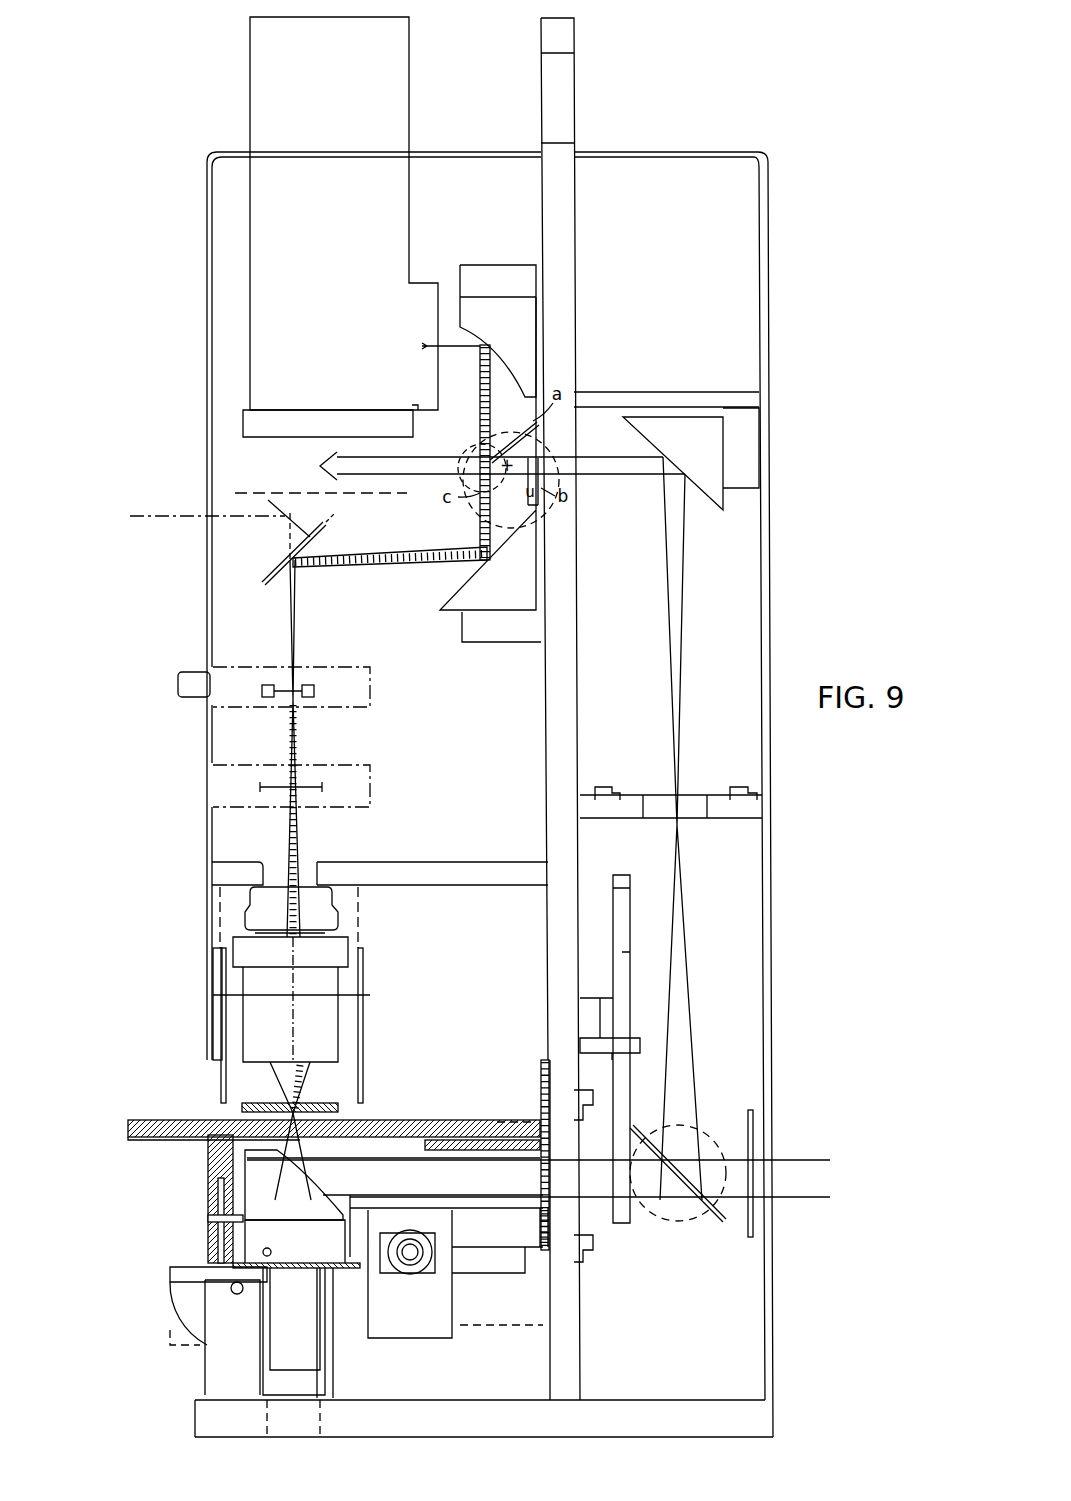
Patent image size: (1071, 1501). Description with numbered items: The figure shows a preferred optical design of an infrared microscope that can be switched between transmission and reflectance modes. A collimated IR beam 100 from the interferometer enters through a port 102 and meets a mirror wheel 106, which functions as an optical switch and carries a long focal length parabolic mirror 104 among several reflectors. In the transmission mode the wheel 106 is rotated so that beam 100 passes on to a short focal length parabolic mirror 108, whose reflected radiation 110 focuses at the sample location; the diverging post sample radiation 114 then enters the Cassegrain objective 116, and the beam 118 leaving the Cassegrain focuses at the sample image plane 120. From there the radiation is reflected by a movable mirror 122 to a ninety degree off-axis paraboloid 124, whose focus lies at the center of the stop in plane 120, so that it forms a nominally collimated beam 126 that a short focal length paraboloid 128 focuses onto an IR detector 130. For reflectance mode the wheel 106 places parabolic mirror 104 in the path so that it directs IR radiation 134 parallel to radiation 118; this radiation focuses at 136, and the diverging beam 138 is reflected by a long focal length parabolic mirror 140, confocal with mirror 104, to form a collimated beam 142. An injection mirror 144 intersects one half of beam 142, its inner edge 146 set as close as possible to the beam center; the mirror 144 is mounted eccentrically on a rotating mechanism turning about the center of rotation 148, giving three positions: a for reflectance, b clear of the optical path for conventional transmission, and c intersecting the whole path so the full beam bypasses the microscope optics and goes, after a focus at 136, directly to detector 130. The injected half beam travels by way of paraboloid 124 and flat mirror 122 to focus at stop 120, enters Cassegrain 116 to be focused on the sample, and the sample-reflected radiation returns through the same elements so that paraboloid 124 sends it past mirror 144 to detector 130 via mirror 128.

The collimated IR beam 100 is at (790, 1198).
The port 102 is at (772, 1120).
The parabolic mirror 104 is at (665, 1227).
The mirror wheel 106 is at (617, 1226).
The short focal length parabolic mirror 108 is at (307, 1185).
The reflected radiation 110 is at (310, 1149).
The post sample radiation 114 is at (310, 1067).
The Cassegrain objective 116 is at (340, 980).
The beam 118 is at (300, 845).
The sample image plane 120 is at (297, 690).
The movable mirror 122 is at (272, 565).
The 90 degree off-axis paraboloid 124 is at (462, 583).
The nominally collimated beam 126 is at (478, 390).
The short focal length paraboloid 128 is at (507, 362).
The IR detector 130 is at (420, 346).
The IR radiation 134 is at (690, 985).
The focus 136 is at (683, 806).
The diverging beam 138 is at (683, 686).
The parabolic mirror 140 is at (705, 484).
The collimated beam 142 is at (618, 478).
The injection mirror 144 is at (542, 428).
The inner edge 146 is at (475, 460).
The center of rotation 148 is at (548, 528).